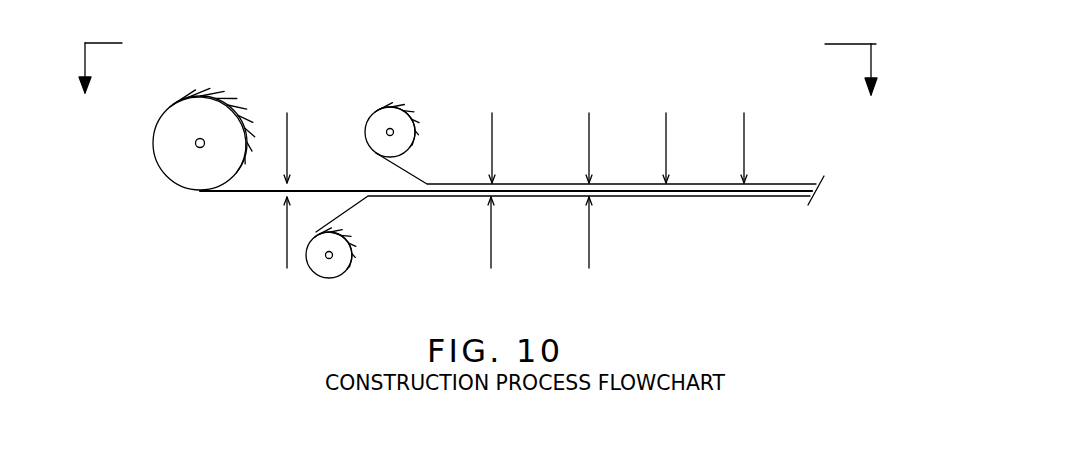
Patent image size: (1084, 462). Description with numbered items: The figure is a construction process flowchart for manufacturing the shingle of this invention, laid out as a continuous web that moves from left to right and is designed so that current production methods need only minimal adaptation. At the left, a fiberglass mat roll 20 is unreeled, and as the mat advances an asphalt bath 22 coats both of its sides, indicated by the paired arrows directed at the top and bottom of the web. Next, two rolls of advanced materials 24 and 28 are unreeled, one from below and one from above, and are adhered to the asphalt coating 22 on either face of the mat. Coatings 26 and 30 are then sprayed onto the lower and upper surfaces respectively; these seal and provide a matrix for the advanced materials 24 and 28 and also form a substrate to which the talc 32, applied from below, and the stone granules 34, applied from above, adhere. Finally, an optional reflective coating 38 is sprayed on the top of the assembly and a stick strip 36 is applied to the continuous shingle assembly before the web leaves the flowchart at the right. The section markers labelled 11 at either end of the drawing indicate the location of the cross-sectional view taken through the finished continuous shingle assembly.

The section line for FIG. 11 is at (481, 92).
The fiberglass mat roll 20 is at (182, 122).
The asphalt bath 22 is at (287, 190).
The roll of advanced material 24 is at (333, 267).
The coating 26 is at (490, 243).
The roll of advanced material 28 is at (385, 122).
The coating 30 is at (493, 137).
The talc 32 is at (589, 243).
The stone granules 34 is at (589, 137).
The stick strip 36 is at (744, 137).
The reflective coating 38 is at (666, 137).